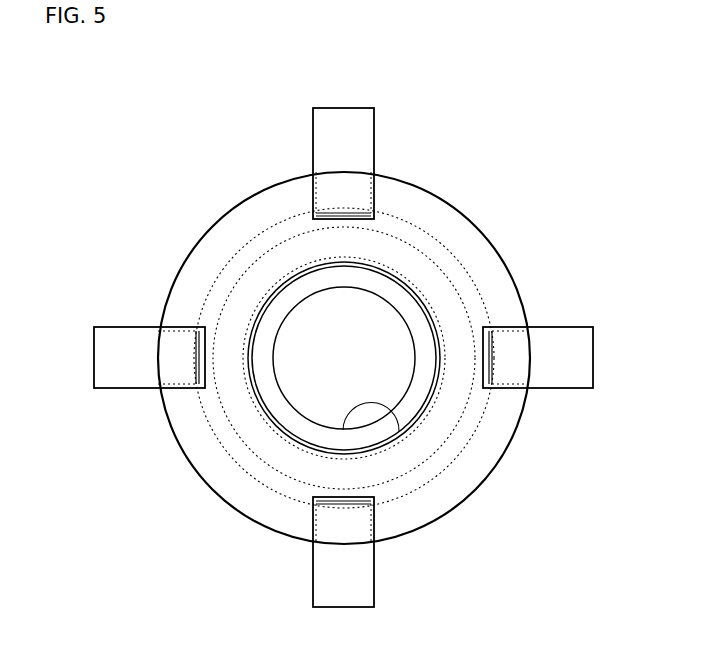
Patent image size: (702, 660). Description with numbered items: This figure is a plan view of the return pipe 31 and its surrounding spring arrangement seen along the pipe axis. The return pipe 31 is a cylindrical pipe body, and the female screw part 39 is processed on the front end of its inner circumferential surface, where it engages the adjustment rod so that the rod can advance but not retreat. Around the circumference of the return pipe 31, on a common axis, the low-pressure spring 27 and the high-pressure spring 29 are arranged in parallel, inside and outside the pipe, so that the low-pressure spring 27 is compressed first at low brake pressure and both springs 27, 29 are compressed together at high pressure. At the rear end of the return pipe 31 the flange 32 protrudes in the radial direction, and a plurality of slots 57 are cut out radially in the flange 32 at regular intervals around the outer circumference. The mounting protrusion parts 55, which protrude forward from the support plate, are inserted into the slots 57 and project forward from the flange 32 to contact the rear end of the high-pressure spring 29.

The low-pressure spring 27 is at (258, 438).
The high-pressure spring 29 is at (453, 222).
The return pipe 31 is at (257, 308).
The flange 32 is at (205, 211).
The female screw part 39 is at (399, 431).
The mounting protrusion parts 55 is at (342, 125).
The slots 57 is at (165, 341).